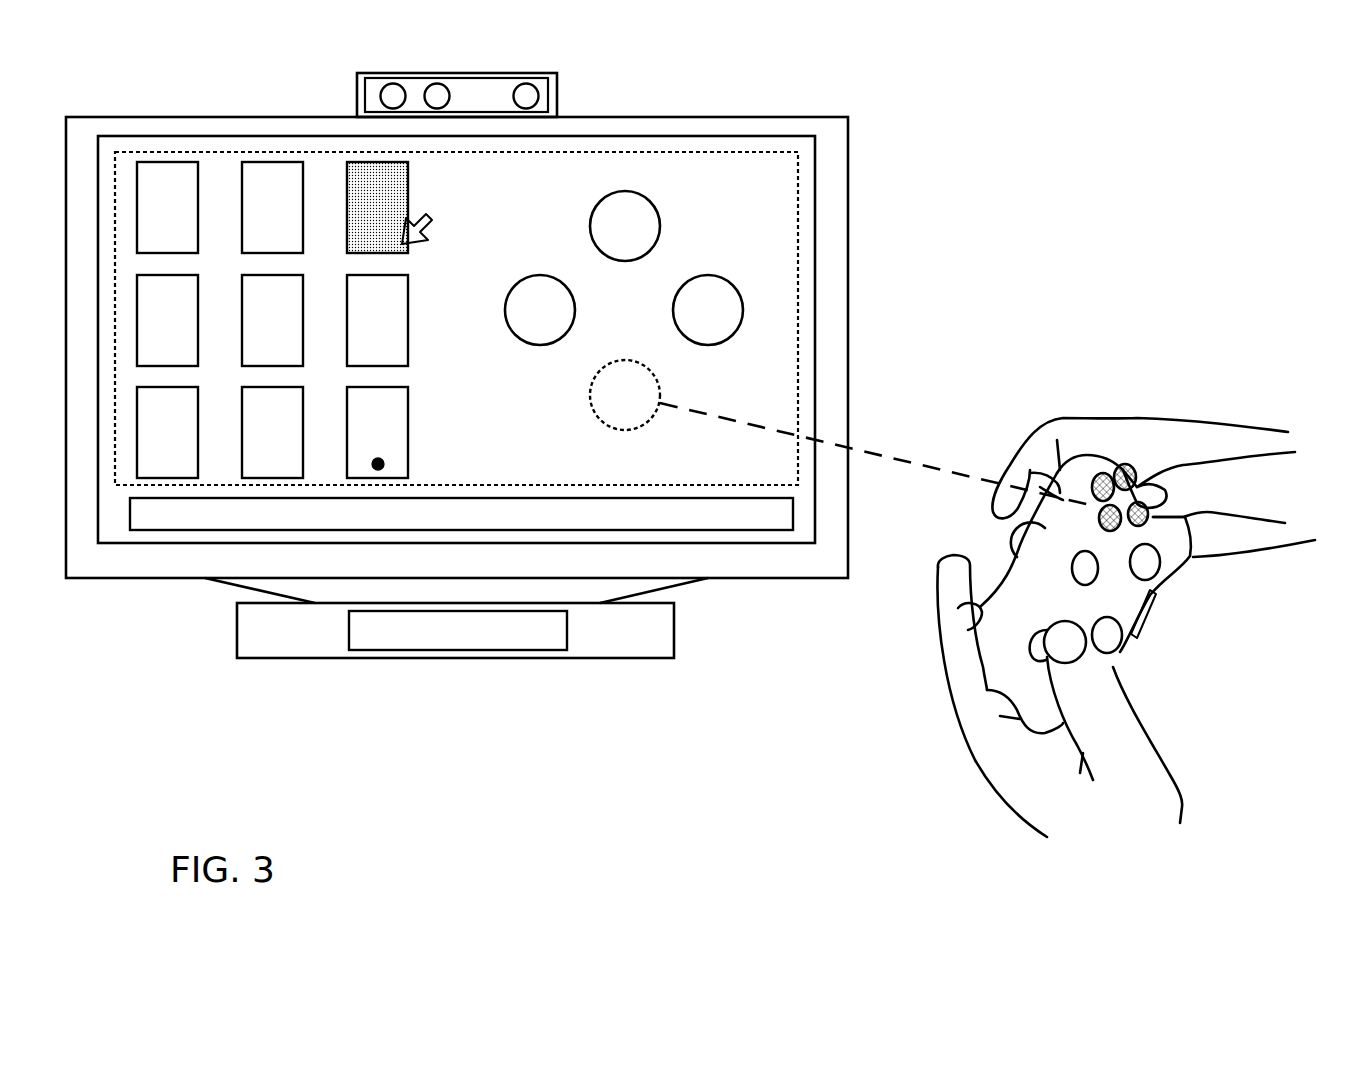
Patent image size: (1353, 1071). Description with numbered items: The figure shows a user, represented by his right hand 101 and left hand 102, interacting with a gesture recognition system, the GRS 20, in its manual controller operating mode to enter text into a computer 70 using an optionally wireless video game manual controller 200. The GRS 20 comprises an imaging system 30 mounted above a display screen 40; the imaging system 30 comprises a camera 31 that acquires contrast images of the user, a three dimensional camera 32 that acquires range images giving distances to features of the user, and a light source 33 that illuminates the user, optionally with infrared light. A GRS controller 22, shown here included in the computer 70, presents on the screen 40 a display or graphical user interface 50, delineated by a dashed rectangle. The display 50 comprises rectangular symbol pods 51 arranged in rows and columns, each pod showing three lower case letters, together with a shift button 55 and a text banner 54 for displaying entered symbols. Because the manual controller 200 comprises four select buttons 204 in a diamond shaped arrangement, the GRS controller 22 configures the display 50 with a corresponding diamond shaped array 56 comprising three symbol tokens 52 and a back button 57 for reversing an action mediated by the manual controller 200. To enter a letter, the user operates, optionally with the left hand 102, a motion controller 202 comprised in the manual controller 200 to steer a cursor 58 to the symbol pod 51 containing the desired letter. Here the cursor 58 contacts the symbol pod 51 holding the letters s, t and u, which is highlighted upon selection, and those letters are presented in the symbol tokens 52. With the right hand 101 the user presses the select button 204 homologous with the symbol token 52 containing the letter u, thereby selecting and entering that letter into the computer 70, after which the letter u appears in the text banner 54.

The GRS 20 is at (1100, 164).
The GRS controller 22 is at (385, 652).
The imaging system 30 is at (417, 91).
The camera 31 is at (381, 98).
The 3D camera 32 is at (449, 96).
The light source 33 is at (538, 95).
The display screen 40 is at (848, 238).
The display 50 is at (798, 190).
The symbol pods 51 is at (272, 478).
The symbol tokens 52 is at (660, 218).
The text banner 54 is at (793, 515).
The shift button 55 is at (384, 466).
The diamond shaped array 56 is at (663, 174).
The back button 57 is at (508, 330).
The cursor 58 is at (430, 236).
The computer 70 is at (538, 658).
The right hand 101 is at (1200, 434).
The left hand 102 is at (1020, 777).
The manual controller 200 is at (1092, 532).
The motion controller 202 is at (1030, 657).
The select buttons 204 is at (1114, 468).